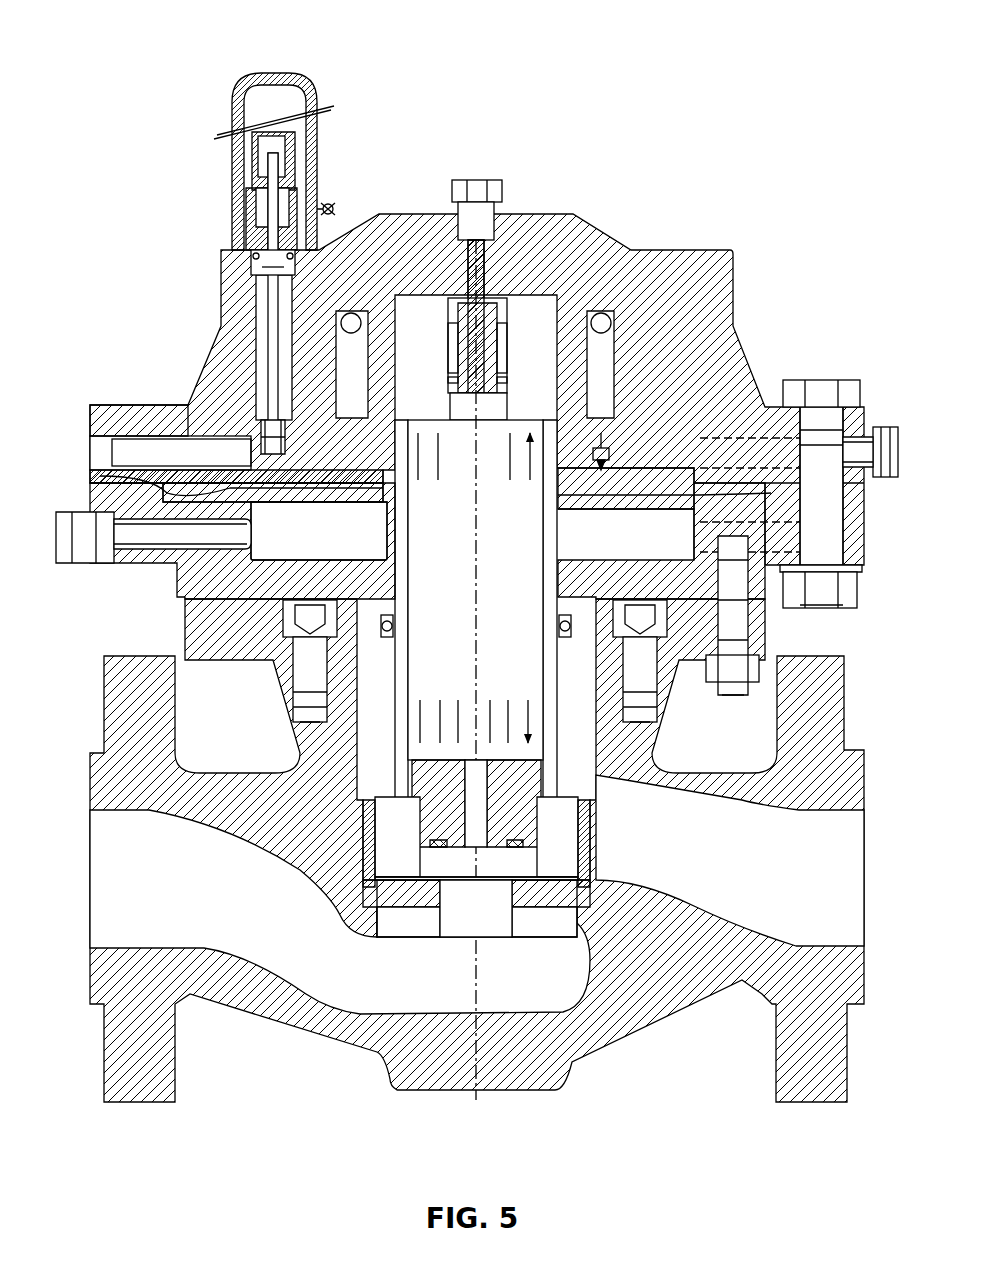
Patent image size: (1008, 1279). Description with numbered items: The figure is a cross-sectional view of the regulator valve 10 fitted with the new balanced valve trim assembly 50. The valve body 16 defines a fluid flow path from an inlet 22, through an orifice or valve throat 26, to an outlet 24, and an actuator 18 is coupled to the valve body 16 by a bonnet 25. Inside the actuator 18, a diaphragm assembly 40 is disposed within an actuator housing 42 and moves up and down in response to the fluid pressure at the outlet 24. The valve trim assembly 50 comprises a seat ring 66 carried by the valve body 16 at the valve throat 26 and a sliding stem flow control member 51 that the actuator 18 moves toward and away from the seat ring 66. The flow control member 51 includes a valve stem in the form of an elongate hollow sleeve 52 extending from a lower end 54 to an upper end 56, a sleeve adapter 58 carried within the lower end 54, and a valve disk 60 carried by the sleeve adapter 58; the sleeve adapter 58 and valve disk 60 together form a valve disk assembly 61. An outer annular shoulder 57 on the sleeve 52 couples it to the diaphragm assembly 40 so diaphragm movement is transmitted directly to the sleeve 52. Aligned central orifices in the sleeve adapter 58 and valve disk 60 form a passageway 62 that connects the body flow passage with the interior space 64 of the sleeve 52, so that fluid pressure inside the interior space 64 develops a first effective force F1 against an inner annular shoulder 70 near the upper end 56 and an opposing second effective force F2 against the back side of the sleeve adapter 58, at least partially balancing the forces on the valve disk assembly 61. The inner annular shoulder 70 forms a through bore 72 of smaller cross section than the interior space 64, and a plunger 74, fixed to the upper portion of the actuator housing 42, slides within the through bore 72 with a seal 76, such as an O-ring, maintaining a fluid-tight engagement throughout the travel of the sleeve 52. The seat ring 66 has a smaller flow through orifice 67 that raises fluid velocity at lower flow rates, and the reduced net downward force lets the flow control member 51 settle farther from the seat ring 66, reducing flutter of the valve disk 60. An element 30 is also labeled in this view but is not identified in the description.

The regulator valve 10 is at (120, 56).
The valve body 16 is at (120, 1060).
The actuator 18 is at (750, 348).
The inlet 22 is at (340, 912).
The outlet 24 is at (730, 860).
The bonnet 25 is at (768, 644).
The valve throat 26 is at (577, 922).
The valve seat area 30 is at (360, 843).
The diaphragm assembly 40 is at (295, 482).
The actuator housing 42 is at (100, 430).
The valve trim assembly 50 is at (417, 922).
The sliding stem flow control member 51 is at (380, 678).
The sleeve 52 is at (552, 567).
The lower end 54 is at (557, 790).
The upper end 56 is at (510, 380).
The outer annular shoulder 57 is at (588, 505).
The sleeve adapter 58 is at (520, 773).
The valve disk 60 is at (515, 848).
The valve disk assembly 61 is at (397, 824).
The passageway 62 is at (470, 777).
The interior space 64 is at (475, 670).
The seat ring 66 is at (363, 891).
The flow through orifice 67 is at (463, 893).
The inner annular shoulder 70 is at (445, 362).
The through bore 72 is at (430, 404).
The plunger 74 is at (521, 380).
The seal 76 is at (506, 384).
The first effective force F1 is at (527, 452).
The second effective force F2 is at (527, 717).